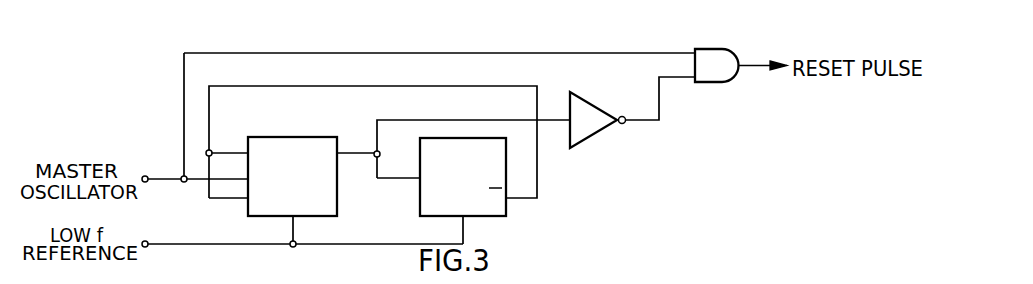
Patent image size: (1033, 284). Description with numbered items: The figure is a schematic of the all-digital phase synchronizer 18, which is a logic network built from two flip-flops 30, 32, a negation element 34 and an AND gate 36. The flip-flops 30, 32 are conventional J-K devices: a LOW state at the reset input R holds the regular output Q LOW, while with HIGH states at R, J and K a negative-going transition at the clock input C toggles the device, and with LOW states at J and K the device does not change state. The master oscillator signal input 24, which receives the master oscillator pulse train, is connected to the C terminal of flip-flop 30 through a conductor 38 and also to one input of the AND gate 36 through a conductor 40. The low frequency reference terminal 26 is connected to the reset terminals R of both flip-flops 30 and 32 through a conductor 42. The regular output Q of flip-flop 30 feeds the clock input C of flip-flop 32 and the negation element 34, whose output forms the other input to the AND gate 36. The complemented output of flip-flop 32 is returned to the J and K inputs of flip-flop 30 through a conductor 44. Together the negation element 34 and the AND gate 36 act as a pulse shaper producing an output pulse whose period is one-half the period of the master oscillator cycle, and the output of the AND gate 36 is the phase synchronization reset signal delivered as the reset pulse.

The all-digital phase synchronizer 18 is at (488, 47).
The master oscillator signal input 24 is at (145, 176).
The low frequency reference terminal 26 is at (146, 242).
The flip-flop 30 is at (261, 137).
The flip-flop 32 is at (422, 138).
The negation element 34 is at (585, 104).
The AND gate 36 is at (720, 82).
The conductor 38 is at (201, 181).
The conductor 40 is at (465, 54).
The conductor 42 is at (333, 243).
The conductor 44 is at (447, 87).